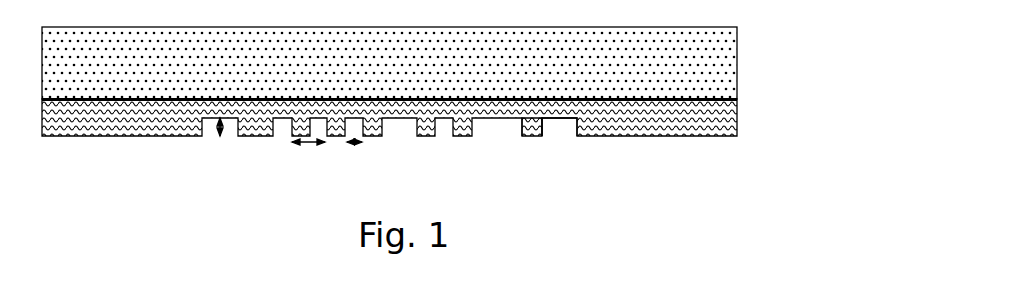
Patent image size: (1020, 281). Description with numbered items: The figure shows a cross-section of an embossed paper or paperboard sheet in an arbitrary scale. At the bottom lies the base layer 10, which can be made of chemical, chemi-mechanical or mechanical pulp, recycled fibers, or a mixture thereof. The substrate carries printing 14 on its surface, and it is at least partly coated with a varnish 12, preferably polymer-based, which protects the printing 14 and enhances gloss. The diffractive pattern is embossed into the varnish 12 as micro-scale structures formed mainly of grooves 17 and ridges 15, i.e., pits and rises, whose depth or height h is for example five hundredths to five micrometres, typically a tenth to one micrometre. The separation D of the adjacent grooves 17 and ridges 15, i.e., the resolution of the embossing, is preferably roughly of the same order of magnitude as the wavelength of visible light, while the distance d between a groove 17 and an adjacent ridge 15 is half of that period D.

The base layer 10 is at (728, 65).
The varnish 12 is at (724, 119).
The printing 14 is at (737, 99).
The ridge 15 is at (526, 129).
The groove 17 is at (553, 127).
The depth or height of grooves and ridges h is at (219, 130).
The separation of adjacent grooves and ridges D is at (308, 168).
The distance between a groove and an adjacent ridge d is at (352, 168).